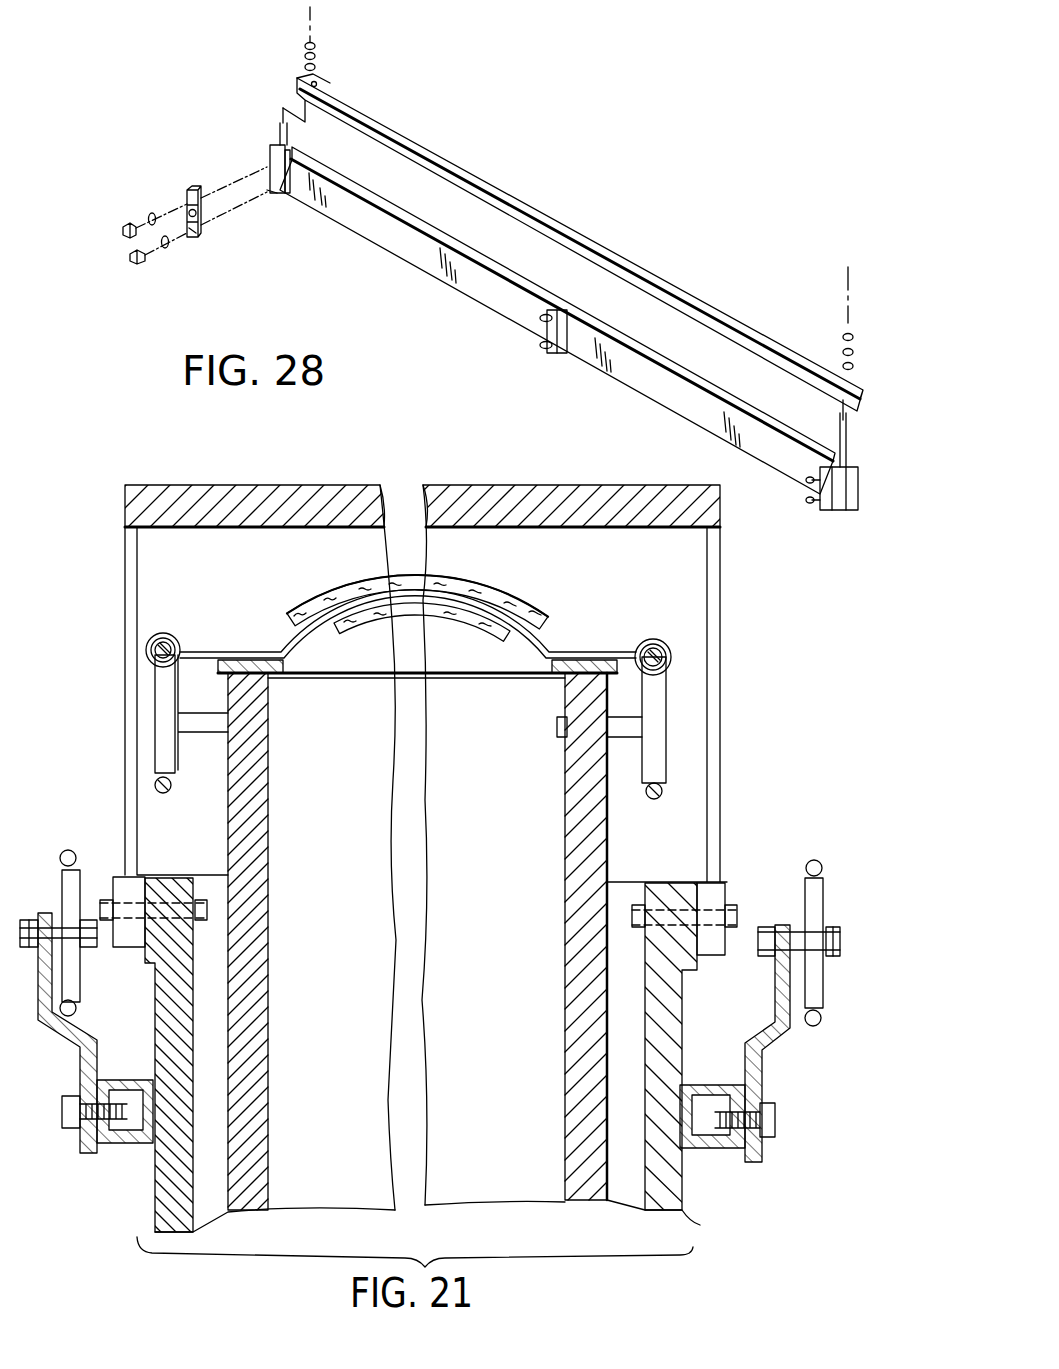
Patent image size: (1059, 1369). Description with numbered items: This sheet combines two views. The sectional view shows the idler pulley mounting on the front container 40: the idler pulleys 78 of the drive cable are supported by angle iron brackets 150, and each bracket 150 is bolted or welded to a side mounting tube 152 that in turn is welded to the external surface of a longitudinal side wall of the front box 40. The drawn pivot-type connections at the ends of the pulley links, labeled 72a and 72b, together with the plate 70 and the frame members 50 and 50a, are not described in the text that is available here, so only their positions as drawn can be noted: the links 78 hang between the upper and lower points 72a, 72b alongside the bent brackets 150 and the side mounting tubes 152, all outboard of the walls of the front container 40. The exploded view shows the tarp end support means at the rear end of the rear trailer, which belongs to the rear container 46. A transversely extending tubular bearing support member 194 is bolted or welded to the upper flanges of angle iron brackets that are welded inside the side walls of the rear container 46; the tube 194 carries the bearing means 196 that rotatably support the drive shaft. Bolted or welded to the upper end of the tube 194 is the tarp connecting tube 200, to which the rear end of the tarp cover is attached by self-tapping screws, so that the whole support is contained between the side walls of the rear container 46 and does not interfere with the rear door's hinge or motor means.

In FIG. 28, the tarp connecting tube 200 is at (657, 280).
In FIG. 28, the tubular bearing support member 194 is at (413, 247).
In FIG. 28, the bearing means 196 is at (203, 222).
In FIG. 21, the frame top plate 50 is at (161, 500).
In FIG. 21, the frame side wall 50a is at (125, 669).
In FIG. 21, the rear container 46 is at (616, 853).
In FIG. 21, the front container 40 is at (665, 1207).
In FIG. 21, the angle iron brackets 150 is at (773, 1036).
In FIG. 21, the mounting plate assembly 70 is at (37, 988).
In FIG. 21, the upper pivot pin 72a is at (67, 850).
In FIG. 21, the lower pivot pin 72b is at (63, 1016).
In FIG. 21, the idler pulleys 78 is at (65, 893).
In FIG. 21, the side mounting tubes 152 is at (130, 1146).